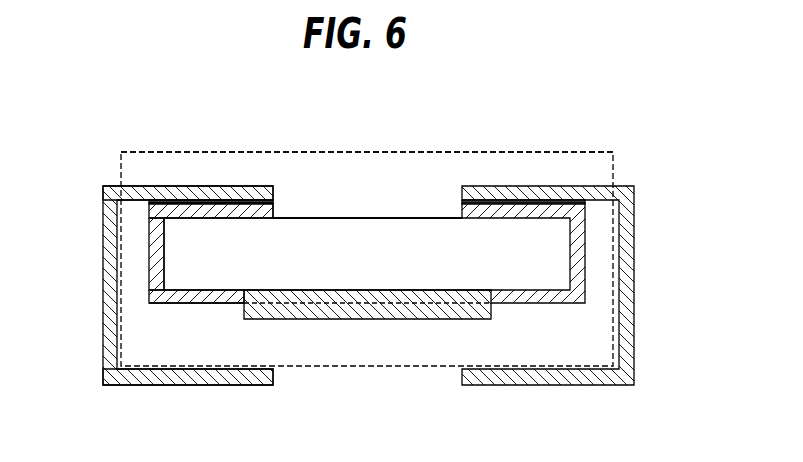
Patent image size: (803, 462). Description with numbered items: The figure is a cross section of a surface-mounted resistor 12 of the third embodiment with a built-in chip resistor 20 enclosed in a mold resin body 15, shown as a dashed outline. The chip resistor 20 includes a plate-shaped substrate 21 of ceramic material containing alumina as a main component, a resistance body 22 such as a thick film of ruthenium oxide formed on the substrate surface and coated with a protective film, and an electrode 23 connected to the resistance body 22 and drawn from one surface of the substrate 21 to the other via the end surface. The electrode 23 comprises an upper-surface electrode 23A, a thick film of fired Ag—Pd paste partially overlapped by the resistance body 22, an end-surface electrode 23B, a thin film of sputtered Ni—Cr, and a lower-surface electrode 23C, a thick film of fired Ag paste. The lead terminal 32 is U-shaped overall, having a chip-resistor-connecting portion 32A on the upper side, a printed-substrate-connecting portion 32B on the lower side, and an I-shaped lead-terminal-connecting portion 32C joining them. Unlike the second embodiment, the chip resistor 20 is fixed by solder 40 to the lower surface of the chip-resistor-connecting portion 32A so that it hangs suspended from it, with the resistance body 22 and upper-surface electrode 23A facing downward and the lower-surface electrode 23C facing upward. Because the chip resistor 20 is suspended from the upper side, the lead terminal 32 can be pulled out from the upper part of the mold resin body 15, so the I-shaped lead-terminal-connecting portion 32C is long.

The surface-mounted resistor 12 is at (647, 152).
The mold resin body 15 is at (238, 152).
The chip resistor 20 is at (442, 181).
The substrate 21 is at (400, 218).
The resistance body 22 is at (380, 319).
The electrode 23 is at (569, 247).
The upper-surface electrode 23A is at (230, 290).
The end-surface electrode 23B is at (165, 256).
The lower-surface electrode 23C is at (238, 214).
The lead terminal 32 is at (636, 335).
The chip-resistor-connecting portion 32A is at (175, 186).
The printed-substrate-connecting portion 32B is at (186, 385).
The lead-terminal-connecting portion 32C is at (103, 272).
The solder 40 is at (273, 202).